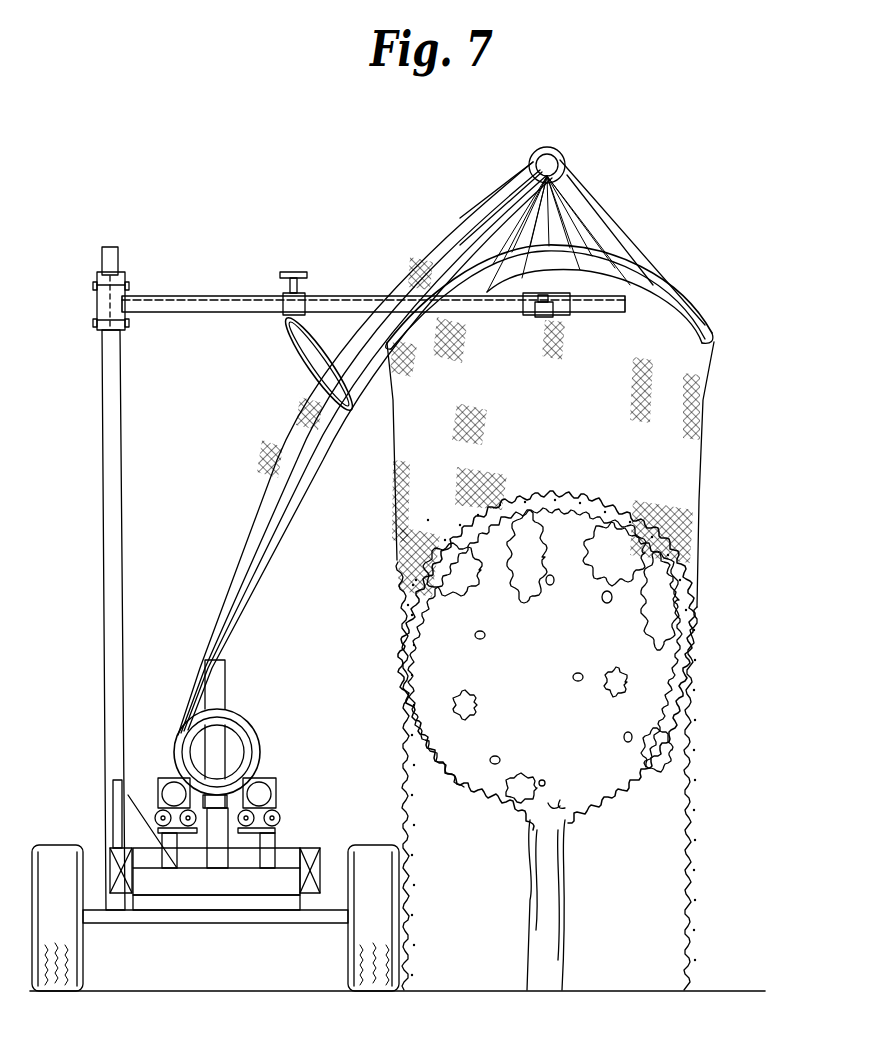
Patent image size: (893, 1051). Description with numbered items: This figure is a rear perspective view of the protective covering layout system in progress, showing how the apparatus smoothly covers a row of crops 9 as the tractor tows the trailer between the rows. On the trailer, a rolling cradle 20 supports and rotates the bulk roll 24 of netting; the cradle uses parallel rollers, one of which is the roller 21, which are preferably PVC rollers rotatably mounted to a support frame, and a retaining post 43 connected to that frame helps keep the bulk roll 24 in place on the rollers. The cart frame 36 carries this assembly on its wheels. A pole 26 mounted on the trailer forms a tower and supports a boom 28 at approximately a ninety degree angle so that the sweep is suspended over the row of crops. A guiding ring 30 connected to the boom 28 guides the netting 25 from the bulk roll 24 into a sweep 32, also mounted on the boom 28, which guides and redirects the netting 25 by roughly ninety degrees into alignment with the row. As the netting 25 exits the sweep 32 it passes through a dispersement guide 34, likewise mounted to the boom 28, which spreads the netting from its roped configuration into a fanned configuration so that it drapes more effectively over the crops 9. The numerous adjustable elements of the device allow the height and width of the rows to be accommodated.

The crops row 9 is at (685, 650).
The rolling cradle 20 is at (277, 797).
The roller 21 is at (157, 778).
The bulk roll 24 is at (252, 728).
The netting 25 is at (680, 462).
The pole 26 is at (104, 458).
The boom 28 is at (220, 296).
The guiding ring 30 is at (298, 360).
The sweep 32 is at (507, 187).
The dispersement guide 34 is at (696, 308).
The wheeled cart frame 36 is at (215, 922).
The retaining post 43 is at (222, 678).